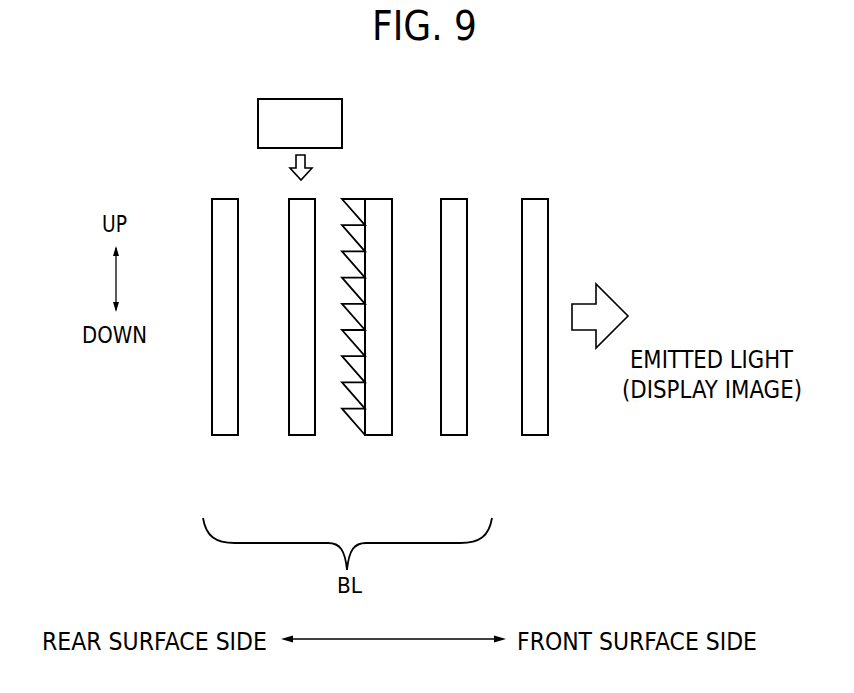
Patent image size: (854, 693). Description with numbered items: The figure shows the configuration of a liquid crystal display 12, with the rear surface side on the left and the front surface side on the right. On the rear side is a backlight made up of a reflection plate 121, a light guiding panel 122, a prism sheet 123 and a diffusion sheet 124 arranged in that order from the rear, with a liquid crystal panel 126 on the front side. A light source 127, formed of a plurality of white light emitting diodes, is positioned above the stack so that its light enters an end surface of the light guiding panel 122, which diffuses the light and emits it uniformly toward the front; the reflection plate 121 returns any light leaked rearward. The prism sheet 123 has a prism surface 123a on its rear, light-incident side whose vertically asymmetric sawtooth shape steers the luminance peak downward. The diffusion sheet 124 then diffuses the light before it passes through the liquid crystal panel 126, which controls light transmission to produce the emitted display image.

The liquid crystal display 12 is at (523, 158).
The reflection plate 121 is at (223, 437).
The light guiding panel 122 is at (300, 437).
The prism sheet 123 is at (373, 333).
The prism surface 123a is at (346, 200).
The diffusion sheet 124 is at (452, 437).
The liquid crystal panel 126 is at (533, 437).
The light source 127 is at (258, 128).